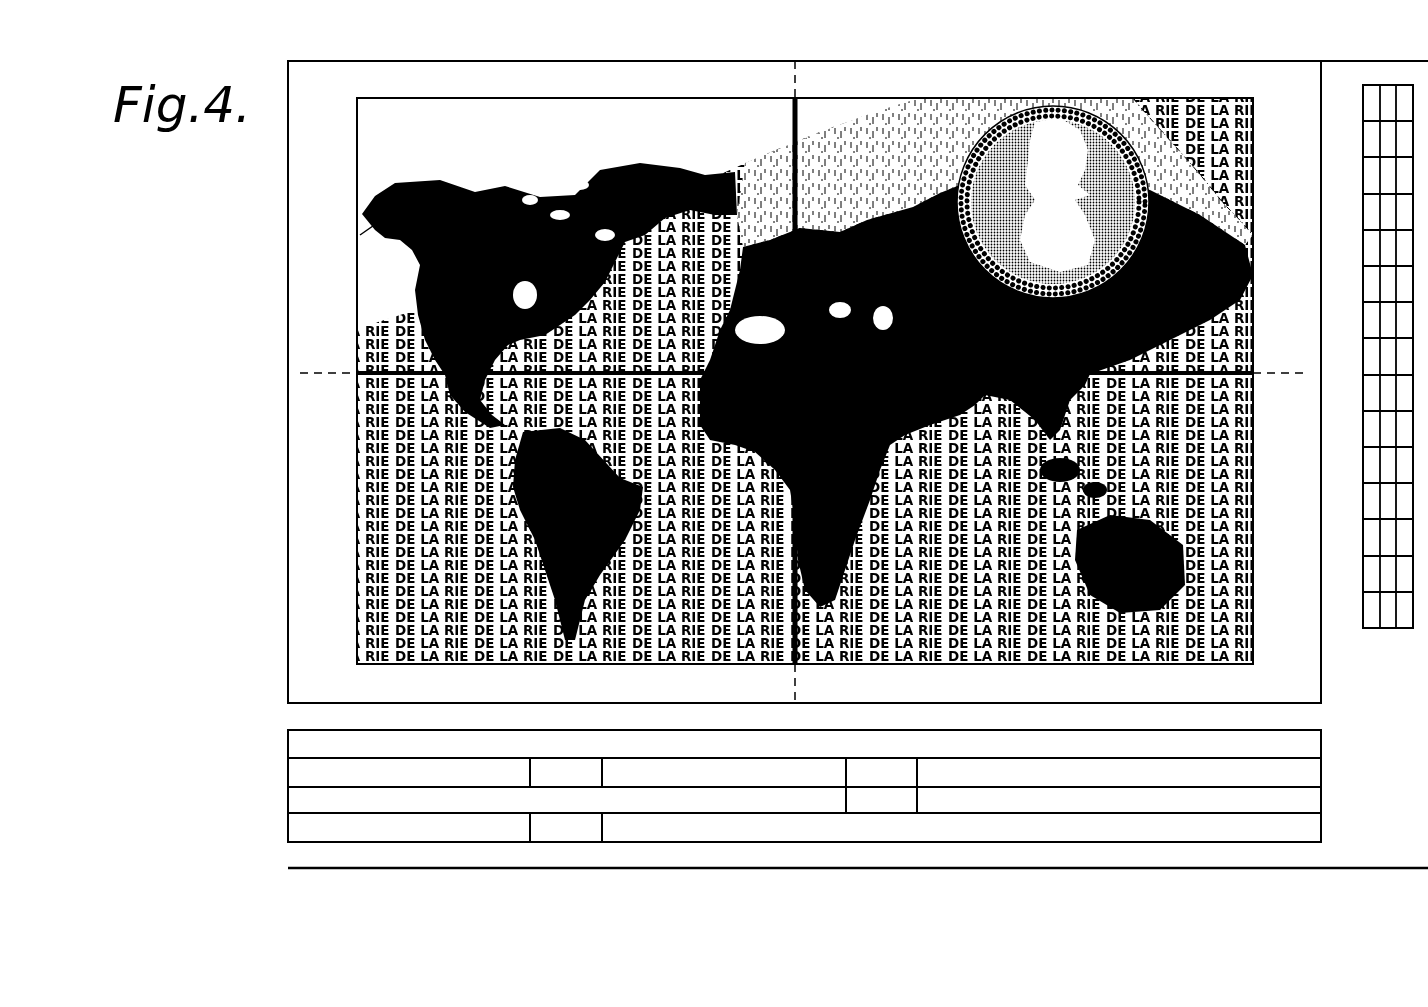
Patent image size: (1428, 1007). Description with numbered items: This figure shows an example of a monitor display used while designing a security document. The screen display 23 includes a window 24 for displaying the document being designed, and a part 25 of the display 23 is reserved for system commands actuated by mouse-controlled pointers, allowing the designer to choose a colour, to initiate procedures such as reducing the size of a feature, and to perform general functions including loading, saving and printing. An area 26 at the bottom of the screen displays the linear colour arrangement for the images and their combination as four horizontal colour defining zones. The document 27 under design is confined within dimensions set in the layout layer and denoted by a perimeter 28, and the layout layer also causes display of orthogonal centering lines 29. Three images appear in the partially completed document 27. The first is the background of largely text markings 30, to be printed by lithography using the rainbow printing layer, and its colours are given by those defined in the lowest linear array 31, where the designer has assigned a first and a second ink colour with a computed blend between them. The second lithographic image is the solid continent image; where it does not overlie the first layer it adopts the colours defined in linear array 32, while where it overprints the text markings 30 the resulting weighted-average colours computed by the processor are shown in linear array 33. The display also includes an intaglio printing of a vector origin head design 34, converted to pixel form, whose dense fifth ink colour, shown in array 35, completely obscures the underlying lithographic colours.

The screen display 23 is at (256, 328).
The window 24 is at (470, 137).
The part of the display reserved for system commands 25 is at (1383, 85).
The area displaying the linear colour arrangement 26 is at (793, 792).
The document under design 27 is at (850, 120).
The perimeter 28 is at (358, 487).
The orthogonal centering lines 29 is at (1252, 350).
The background text markings 30 is at (375, 597).
The linear array 31 is at (288, 830).
The linear array 32 is at (290, 805).
The linear array 33 is at (292, 770).
The vector origin head design 34 is at (1105, 122).
The array 35 is at (292, 742).